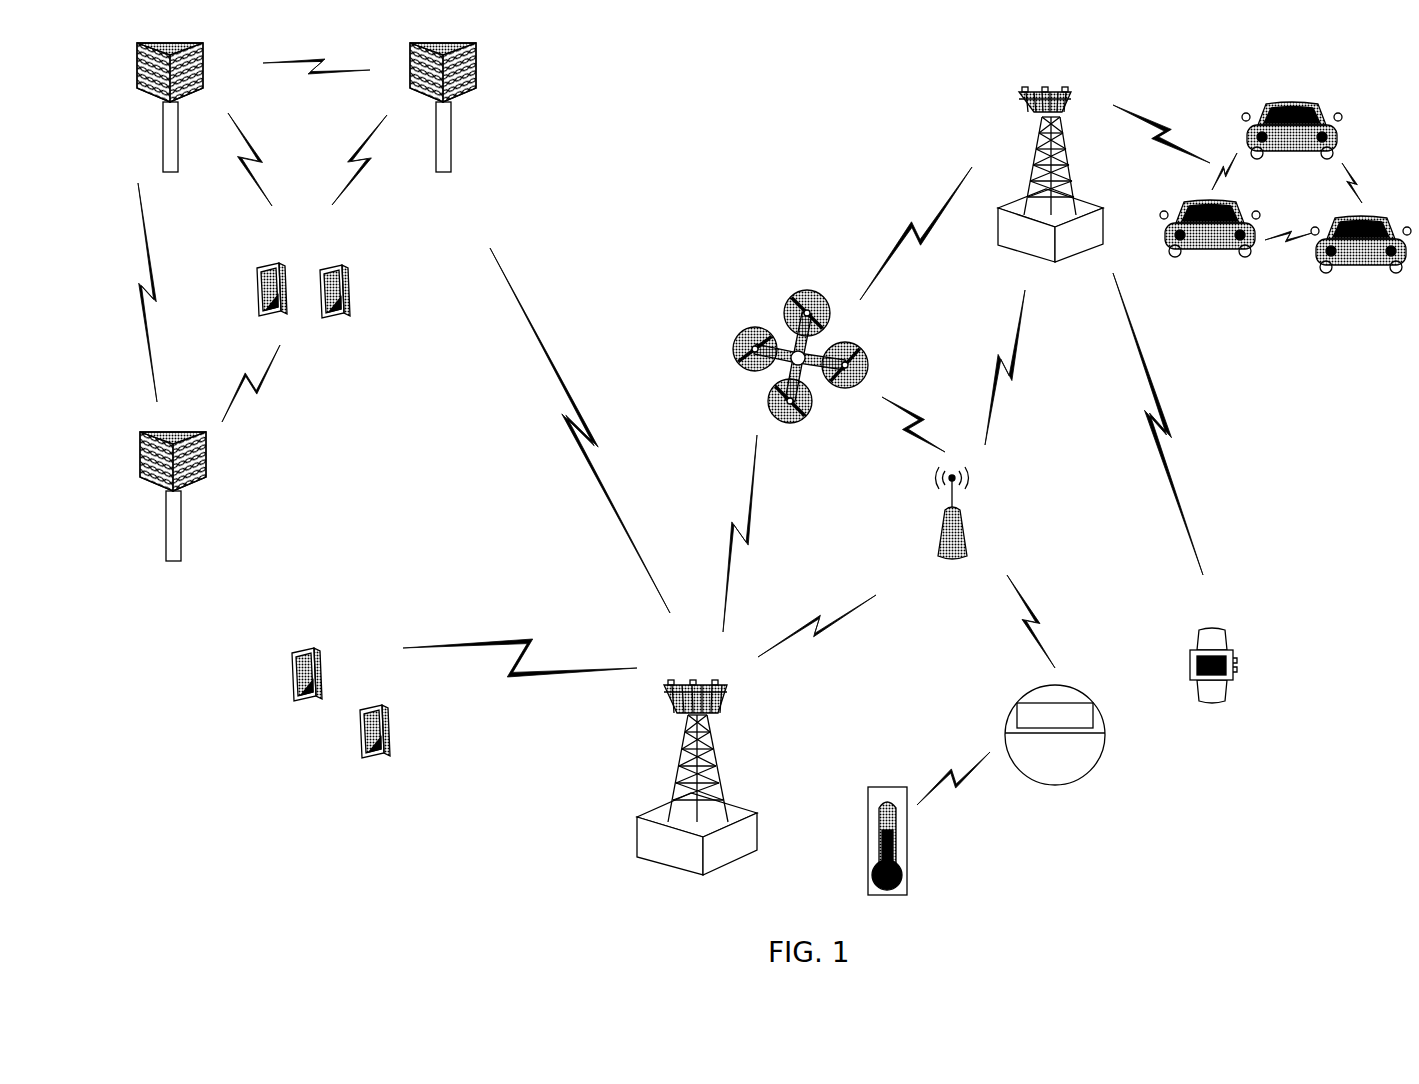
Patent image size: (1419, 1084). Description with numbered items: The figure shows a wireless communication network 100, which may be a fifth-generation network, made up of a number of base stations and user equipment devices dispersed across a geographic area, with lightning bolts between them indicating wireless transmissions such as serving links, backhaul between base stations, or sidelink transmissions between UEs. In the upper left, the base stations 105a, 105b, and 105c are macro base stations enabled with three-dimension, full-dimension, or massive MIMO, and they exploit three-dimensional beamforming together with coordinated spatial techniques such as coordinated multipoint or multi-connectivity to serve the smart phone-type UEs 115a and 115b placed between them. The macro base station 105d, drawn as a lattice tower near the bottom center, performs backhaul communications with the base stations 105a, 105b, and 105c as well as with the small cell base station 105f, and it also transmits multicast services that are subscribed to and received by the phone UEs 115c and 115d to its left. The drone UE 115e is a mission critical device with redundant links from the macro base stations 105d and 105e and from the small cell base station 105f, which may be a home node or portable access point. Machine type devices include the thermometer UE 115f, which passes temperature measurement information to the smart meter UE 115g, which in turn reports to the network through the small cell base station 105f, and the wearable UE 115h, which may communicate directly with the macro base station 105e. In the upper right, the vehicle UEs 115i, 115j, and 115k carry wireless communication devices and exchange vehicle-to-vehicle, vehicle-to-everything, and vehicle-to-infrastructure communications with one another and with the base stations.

The wireless communication network 100 is at (736, 200).
The base station 105a is at (163, 148).
The base station 105b is at (450, 146).
The base station 105c is at (167, 548).
The macro base station 105d is at (656, 860).
The macro base station 105e is at (1014, 250).
The small cell base station 105f is at (940, 556).
The UE 115a is at (257, 276).
The UE 115b is at (348, 281).
The UE 115c is at (292, 660).
The UE 115d is at (390, 722).
The UE 115e is at (735, 352).
The UE 115f is at (905, 884).
The UE 115g is at (1078, 779).
The UE 115h is at (1228, 698).
The UE 115i is at (1316, 104).
The UE 115j is at (1386, 272).
The UE 115k is at (1185, 255).